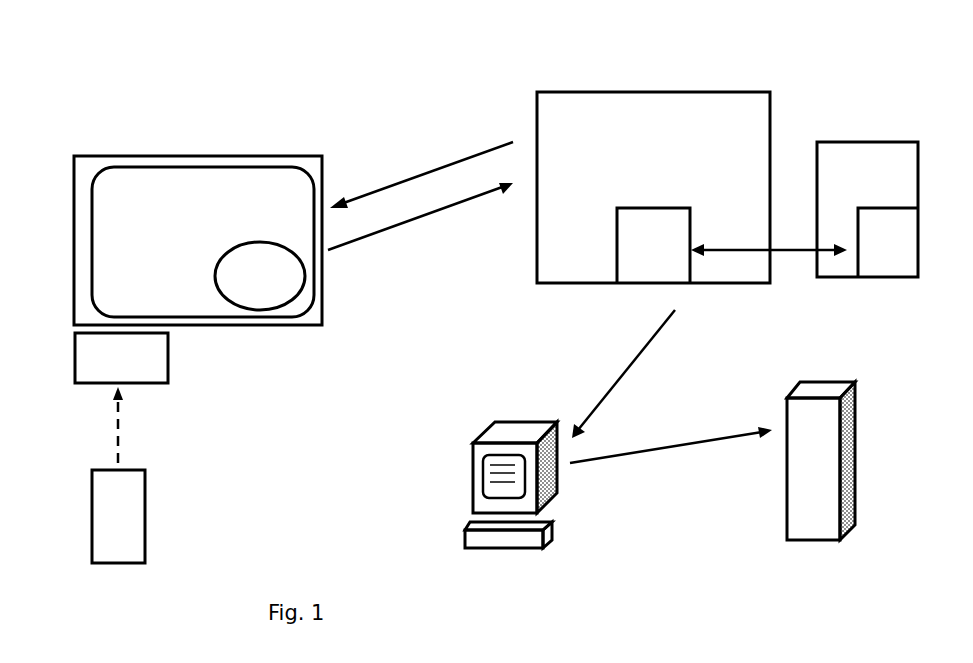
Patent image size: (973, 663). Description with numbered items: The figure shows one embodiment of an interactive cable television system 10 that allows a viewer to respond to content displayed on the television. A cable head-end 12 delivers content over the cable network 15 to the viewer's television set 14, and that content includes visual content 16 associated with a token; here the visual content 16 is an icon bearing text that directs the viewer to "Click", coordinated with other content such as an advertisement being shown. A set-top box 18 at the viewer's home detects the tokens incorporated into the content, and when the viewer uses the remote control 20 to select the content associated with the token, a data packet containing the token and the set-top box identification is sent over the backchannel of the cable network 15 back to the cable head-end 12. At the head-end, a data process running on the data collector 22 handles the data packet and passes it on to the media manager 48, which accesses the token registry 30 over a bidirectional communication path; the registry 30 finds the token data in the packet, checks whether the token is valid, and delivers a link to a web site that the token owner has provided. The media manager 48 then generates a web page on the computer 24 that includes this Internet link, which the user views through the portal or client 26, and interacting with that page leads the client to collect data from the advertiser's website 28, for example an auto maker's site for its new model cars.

The system 10 is at (883, 155).
The cable head-end 12 is at (653, 160).
The television set 14 is at (198, 213).
The cable network 15 is at (420, 184).
The visual content 16 is at (258, 260).
The set-top box 18 is at (151, 358).
The remote control 20 is at (151, 475).
The data collector 22 is at (667, 226).
The computer 24 is at (485, 462).
The portal 26 is at (469, 458).
The advertiser's website 28 is at (842, 444).
The token registry 30 is at (904, 242).
The media manager 48 is at (883, 209).